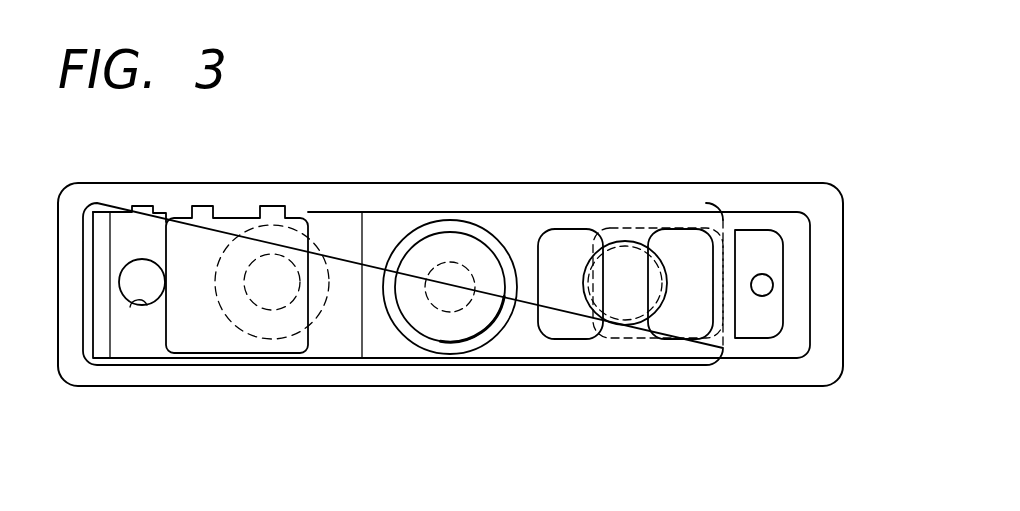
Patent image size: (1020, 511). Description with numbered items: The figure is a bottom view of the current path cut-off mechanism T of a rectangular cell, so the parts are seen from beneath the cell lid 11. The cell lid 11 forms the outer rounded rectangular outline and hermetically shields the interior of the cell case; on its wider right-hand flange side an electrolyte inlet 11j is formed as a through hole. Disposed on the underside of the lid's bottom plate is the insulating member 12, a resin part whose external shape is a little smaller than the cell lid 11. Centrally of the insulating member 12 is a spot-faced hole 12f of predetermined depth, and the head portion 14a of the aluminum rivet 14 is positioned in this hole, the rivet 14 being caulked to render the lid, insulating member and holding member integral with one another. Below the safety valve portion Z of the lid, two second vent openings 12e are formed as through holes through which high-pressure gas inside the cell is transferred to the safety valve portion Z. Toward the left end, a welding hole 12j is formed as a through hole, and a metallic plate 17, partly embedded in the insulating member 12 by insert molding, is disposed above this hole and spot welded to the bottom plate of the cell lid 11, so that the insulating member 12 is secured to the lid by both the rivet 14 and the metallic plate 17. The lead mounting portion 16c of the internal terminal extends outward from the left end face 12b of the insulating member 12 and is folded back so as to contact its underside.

The current path cut-off mechanism T is at (124, 174).
The cell lid 11 is at (798, 175).
The electrolyte inlet 11j is at (762, 290).
The insulating member 12 is at (384, 224).
The end face 12b is at (325, 210).
The second vent openings 12e is at (690, 323).
The spot-faced hole 12f is at (498, 320).
The welding hole 12j is at (130, 307).
The rivet 14 is at (473, 291).
The head portion 14a is at (457, 327).
The lead mounting portion 16c is at (208, 305).
The metallic plate 17 is at (133, 273).
The safety valve portion Z is at (598, 273).